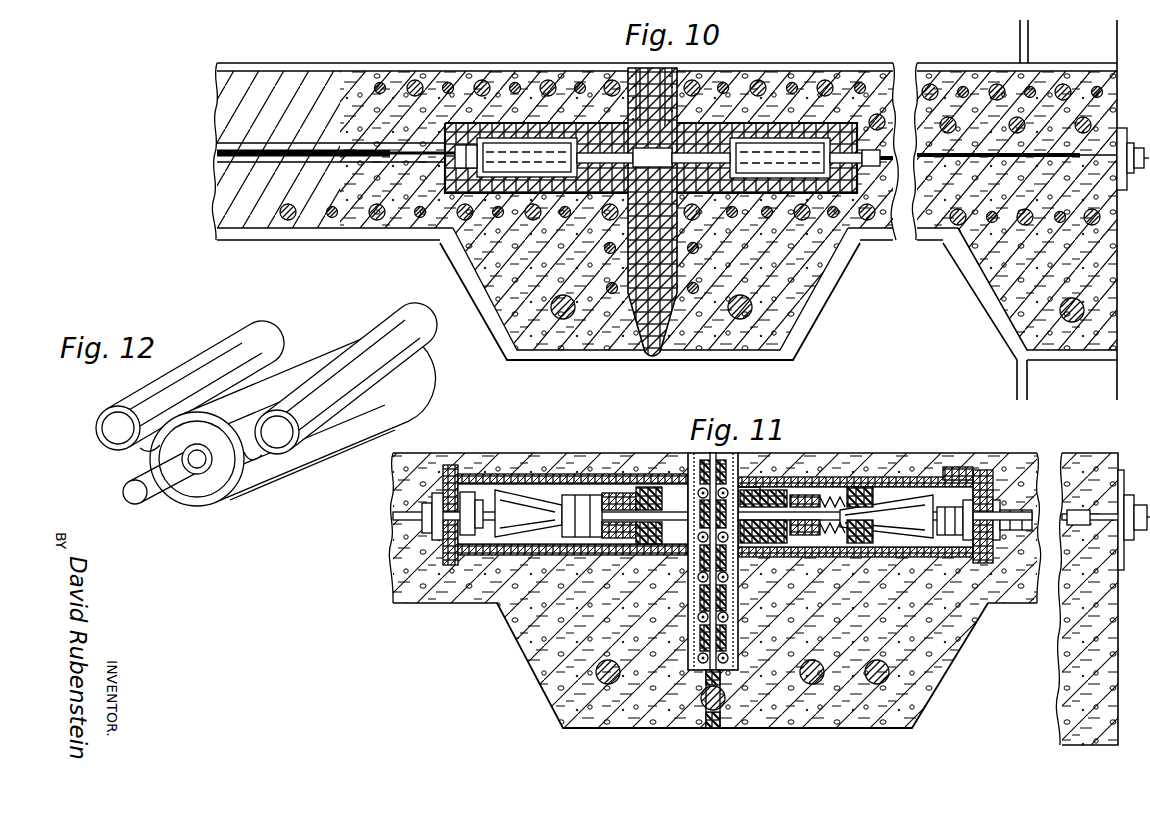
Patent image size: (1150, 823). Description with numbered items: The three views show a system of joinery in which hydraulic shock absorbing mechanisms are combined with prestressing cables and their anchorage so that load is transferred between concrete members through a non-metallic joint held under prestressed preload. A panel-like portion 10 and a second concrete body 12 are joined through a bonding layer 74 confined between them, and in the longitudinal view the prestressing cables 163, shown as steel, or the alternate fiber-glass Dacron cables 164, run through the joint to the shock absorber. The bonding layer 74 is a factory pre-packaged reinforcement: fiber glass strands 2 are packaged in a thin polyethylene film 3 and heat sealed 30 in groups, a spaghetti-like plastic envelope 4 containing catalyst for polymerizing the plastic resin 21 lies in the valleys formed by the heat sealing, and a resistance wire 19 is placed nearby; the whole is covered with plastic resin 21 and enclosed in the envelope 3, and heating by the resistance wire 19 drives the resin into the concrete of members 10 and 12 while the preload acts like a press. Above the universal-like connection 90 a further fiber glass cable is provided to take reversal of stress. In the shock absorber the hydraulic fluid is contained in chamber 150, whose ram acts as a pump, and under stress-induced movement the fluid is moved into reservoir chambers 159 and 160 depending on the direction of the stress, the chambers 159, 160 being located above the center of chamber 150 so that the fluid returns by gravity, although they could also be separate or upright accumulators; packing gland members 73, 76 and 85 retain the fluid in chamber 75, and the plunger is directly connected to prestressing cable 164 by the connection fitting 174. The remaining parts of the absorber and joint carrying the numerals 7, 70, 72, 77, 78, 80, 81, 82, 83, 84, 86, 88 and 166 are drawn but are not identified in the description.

In FIG. 11, the fiber glass strands 2 is at (692, 457).
In FIG. 11, the polyethylene film 3 is at (740, 660).
In FIG. 10, the plastic envelope 4 is at (380, 222).
In FIG. 11, the plastic envelope 4 is at (735, 648).
In FIG. 10, the longitudinal reinforcing bar 7 is at (563, 320).
In FIG. 11, the longitudinal reinforcing bar 7 is at (806, 686).
In FIG. 10, the member portion 10 is at (318, 231).
In FIG. 11, the member portion 10 is at (625, 705).
In FIG. 10, the concrete body 12 is at (803, 325).
In FIG. 11, the concrete body 12 is at (912, 690).
In FIG. 10, the resistance wire 19 is at (422, 220).
In FIG. 11, the resistance wire 19 is at (700, 610).
In FIG. 10, the plastic resin 21 is at (515, 320).
In FIG. 11, the plastic resin 21 is at (708, 468).
In FIG. 11, the heat seal 30 is at (692, 586).
In FIG. 11, the anchor housing 70 is at (875, 478).
In FIG. 11, the nut 72 is at (740, 583).
In FIG. 11, the packing gland member 73 is at (733, 490).
In FIG. 10, the bonding layer 74 is at (633, 68).
In FIG. 11, the bonding layer 74 is at (735, 457).
In FIG. 11, the chamber 75 is at (862, 488).
In FIG. 11, the packing gland member 76 is at (645, 548).
In FIG. 11, the tie bar 77 is at (720, 725).
In FIG. 11, the end plate 78 is at (985, 470).
In FIG. 11, the nut 80 is at (996, 538).
In FIG. 11, the washer 81 is at (985, 563).
In FIG. 11, the cover plate 82 is at (950, 468).
In FIG. 11, the collar 83 is at (945, 556).
In FIG. 11, the wedge sleeve 84 is at (582, 546).
In FIG. 11, the packing gland member 85 is at (625, 542).
In FIG. 11, the cone 86 is at (520, 545).
In FIG. 11, the spring 88 is at (800, 546).
In FIG. 11, the universal-like connection 90 is at (662, 530).
In FIG. 10, the chamber 150 is at (540, 210).
In FIG. 12, the chamber 150 is at (373, 330).
In FIG. 10, the reservoir chamber 159 is at (540, 137).
In FIG. 12, the reservoir chamber 159 is at (392, 384).
In FIG. 10, the reservoir chamber 160 is at (793, 140).
In FIG. 12, the reservoir chamber 160 is at (160, 392).
In FIG. 10, the prestressing cables 163 is at (1040, 153).
In FIG. 11, the prestressing cables 163 is at (1058, 512).
In FIG. 10, the prestressing cable 164 is at (372, 150).
In FIG. 10, the slab top surface 166 is at (772, 66).
In FIG. 10, the connection fitting 174 is at (453, 152).